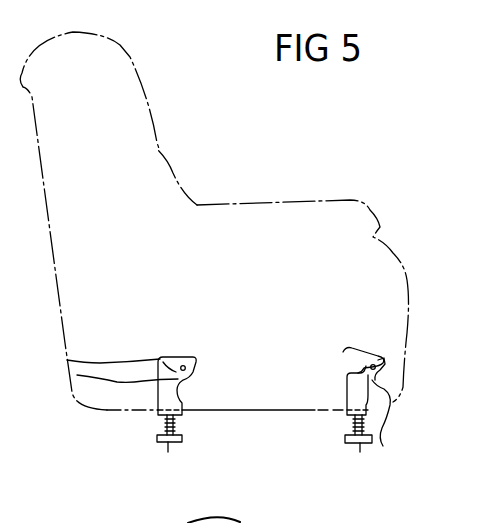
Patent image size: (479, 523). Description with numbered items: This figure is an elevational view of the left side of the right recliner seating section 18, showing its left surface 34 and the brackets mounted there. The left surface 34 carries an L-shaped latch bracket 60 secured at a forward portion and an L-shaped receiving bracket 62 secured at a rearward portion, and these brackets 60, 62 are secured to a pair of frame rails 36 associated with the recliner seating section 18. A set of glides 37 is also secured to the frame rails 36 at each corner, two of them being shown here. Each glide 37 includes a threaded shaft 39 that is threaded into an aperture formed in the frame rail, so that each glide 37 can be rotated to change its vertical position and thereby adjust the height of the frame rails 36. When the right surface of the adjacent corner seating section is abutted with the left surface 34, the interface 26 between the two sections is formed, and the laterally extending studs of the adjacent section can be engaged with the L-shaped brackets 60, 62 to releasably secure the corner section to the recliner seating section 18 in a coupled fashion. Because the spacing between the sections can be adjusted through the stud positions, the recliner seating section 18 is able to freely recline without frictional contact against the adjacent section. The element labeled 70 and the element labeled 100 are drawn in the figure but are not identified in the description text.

The right recliner seating section 18 is at (126, 36).
The left surface 34 is at (247, 237).
The interface 26 is at (215, 392).
The arm rest 70 is at (67, 360).
The L-shaped receiving bracket 62 is at (77, 375).
The frame rails 36 is at (157, 413).
The threaded shaft 39 is at (166, 428).
The glide 37 is at (168, 452).
The L-shaped latch bracket 60 is at (381, 362).
The cable link 100 is at (383, 446).